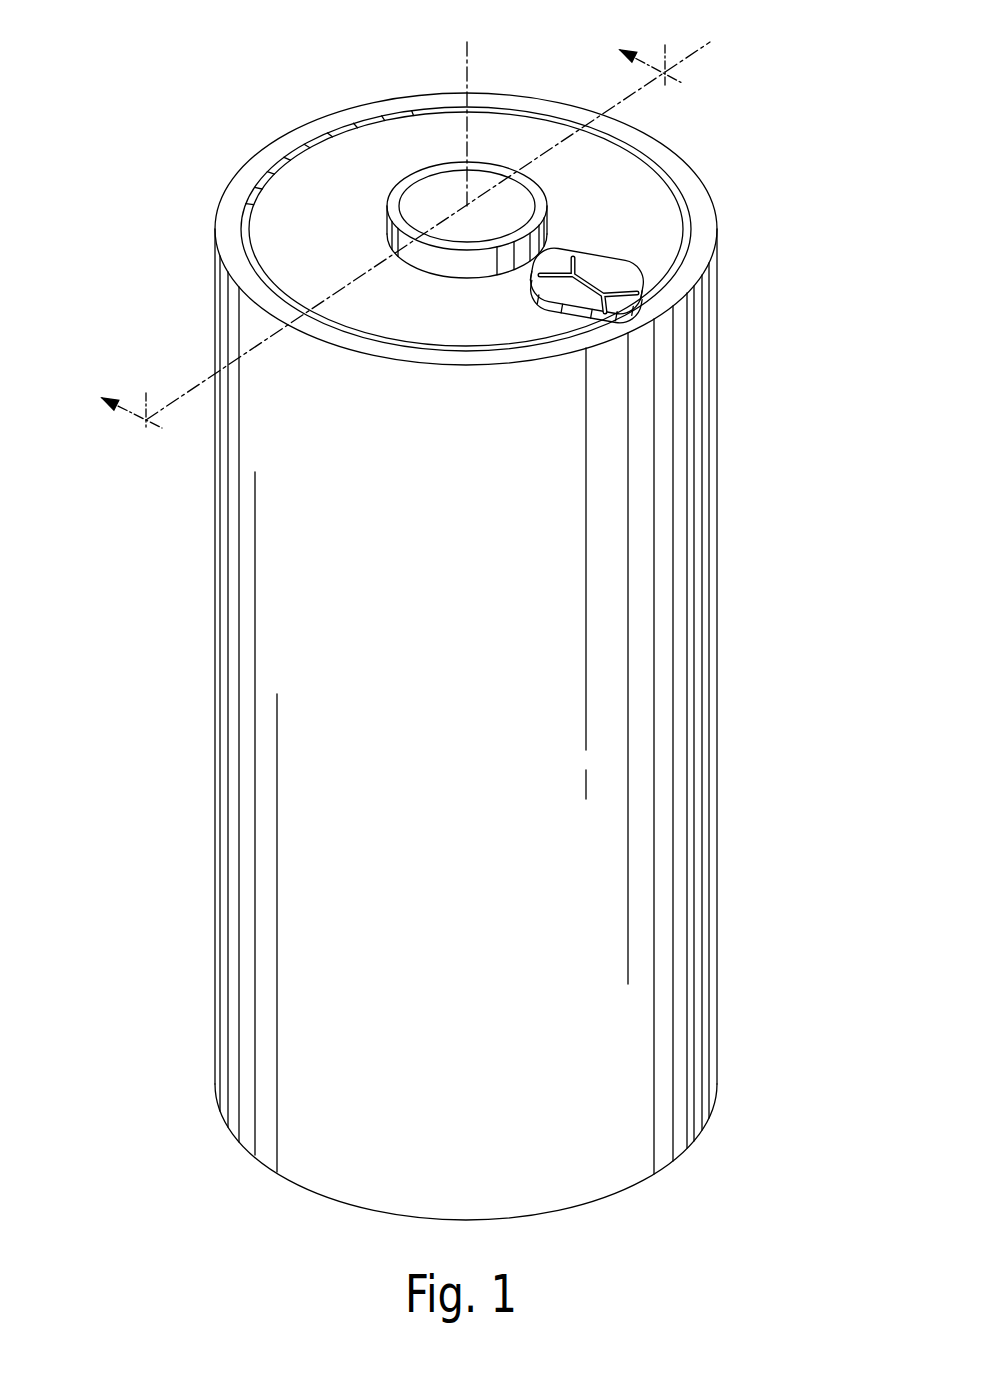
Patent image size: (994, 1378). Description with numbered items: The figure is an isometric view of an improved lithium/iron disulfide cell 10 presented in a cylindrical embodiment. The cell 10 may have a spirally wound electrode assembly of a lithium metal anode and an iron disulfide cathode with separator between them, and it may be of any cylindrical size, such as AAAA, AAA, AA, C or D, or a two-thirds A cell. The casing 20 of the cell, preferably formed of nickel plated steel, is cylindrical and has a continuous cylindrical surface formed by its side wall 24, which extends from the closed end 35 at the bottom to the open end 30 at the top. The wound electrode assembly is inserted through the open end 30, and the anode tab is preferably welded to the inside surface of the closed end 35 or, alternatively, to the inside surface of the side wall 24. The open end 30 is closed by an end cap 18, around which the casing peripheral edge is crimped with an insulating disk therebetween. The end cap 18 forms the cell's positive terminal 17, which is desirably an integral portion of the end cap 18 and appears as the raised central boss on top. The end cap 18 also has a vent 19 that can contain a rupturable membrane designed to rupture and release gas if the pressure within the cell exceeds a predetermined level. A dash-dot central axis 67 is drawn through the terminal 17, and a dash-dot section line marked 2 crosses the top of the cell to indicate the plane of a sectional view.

The cylindrical cell 10 is at (185, 651).
The positive terminal 17 is at (418, 175).
The end cap 18 is at (675, 242).
The vent 19 is at (533, 293).
The cell casing 20 is at (526, 659).
The casing side wall 24 is at (715, 447).
The open end 30 is at (653, 195).
The closed end 35 is at (287, 1181).
The central axis 67 is at (468, 73).
The section line of FIG. 2 is at (406, 245).